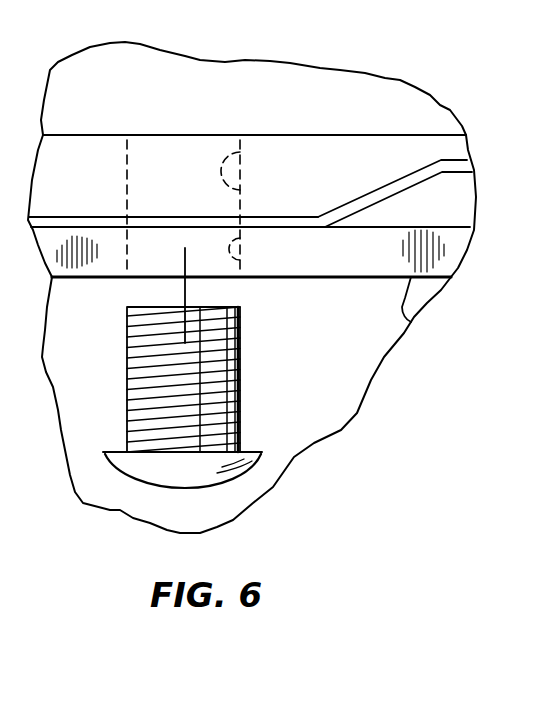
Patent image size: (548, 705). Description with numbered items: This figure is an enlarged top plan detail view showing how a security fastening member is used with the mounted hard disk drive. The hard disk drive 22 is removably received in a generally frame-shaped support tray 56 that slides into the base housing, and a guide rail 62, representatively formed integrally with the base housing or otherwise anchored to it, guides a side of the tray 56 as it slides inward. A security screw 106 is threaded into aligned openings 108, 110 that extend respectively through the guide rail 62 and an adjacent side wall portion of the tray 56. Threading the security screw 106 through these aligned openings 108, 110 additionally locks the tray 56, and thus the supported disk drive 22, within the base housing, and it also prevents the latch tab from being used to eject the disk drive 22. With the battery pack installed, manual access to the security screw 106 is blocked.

The hard disk drive 22 is at (225, 85).
The support tray 56 is at (367, 112).
The guide rail 62 is at (411, 322).
The security screw 106 is at (241, 384).
The opening 108 is at (250, 259).
The opening 110 is at (248, 189).